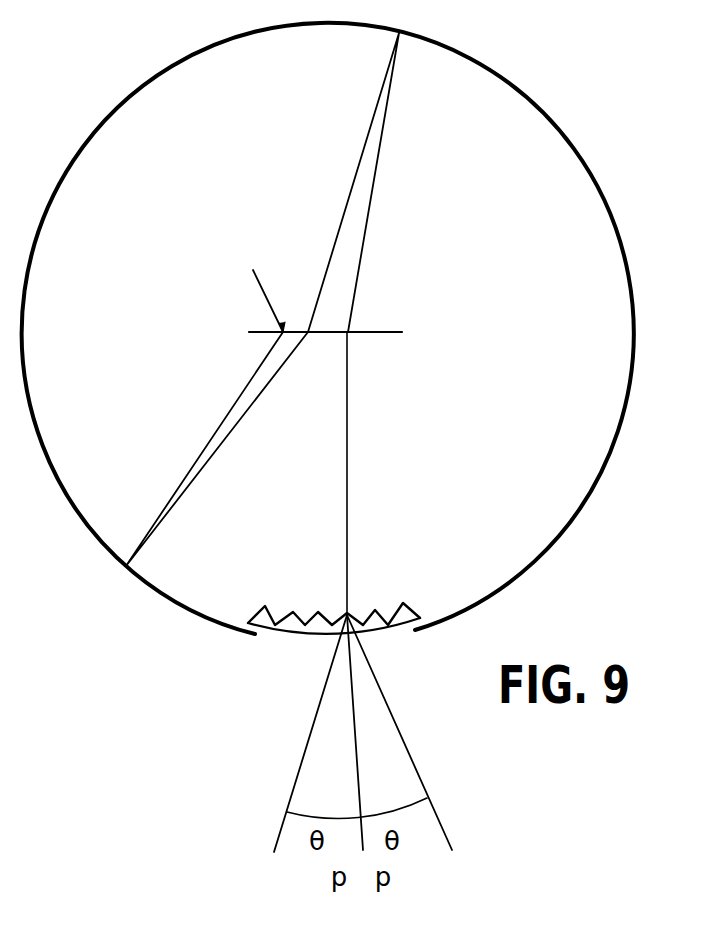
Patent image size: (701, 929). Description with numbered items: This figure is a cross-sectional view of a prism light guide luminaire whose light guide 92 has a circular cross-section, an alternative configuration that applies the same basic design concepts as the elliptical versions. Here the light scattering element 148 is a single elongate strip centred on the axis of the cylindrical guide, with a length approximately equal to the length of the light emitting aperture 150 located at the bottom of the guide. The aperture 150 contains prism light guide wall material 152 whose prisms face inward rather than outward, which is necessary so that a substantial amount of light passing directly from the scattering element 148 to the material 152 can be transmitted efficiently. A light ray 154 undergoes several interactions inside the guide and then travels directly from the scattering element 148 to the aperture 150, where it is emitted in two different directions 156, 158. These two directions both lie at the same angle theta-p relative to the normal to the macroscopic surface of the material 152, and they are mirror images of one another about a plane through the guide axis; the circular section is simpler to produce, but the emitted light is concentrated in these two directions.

The spherical housing / circle 92 is at (540, 110).
The light scattering element 148 is at (387, 332).
The light emitting aperture 150 is at (307, 650).
The prism light guide wall material 152 is at (384, 612).
The light ray 154 is at (255, 286).
The first emission direction 156 is at (294, 754).
The second emission direction 158 is at (419, 754).